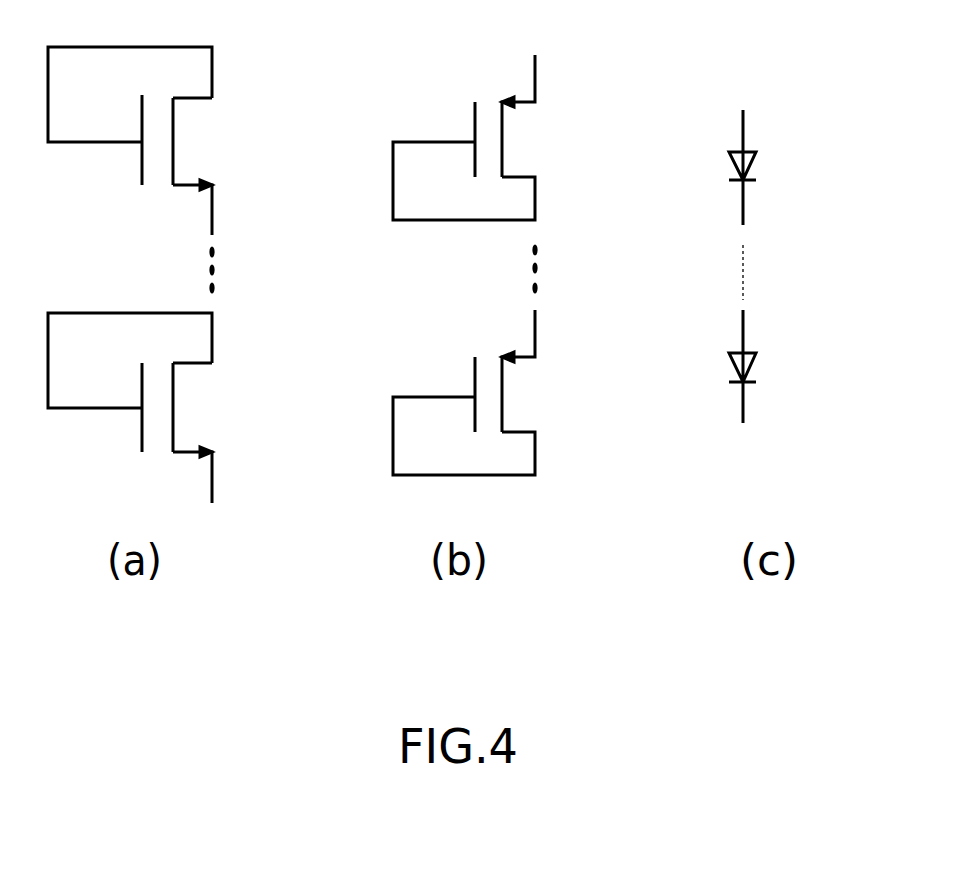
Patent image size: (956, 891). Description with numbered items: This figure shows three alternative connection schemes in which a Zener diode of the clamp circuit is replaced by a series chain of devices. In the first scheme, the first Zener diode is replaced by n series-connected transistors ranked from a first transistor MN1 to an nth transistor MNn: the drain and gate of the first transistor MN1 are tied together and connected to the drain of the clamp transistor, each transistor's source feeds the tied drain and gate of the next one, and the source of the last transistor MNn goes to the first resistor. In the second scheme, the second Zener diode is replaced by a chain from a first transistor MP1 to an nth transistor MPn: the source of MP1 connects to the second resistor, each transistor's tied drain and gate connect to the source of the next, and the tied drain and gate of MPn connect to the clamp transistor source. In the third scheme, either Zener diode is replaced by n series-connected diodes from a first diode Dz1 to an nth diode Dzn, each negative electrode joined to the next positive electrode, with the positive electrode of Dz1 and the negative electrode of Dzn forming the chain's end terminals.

The 1st-ranked transistor MN1 is at (130, 141).
The nth-ranked transistor MNn is at (130, 408).
The 1st-ranked transistor MP1 is at (464, 136).
The nth-ranked transistor MPn is at (464, 392).
The 1st-ranked diode Dz1 is at (774, 167).
The nth-ranked diode Dzn is at (777, 366).